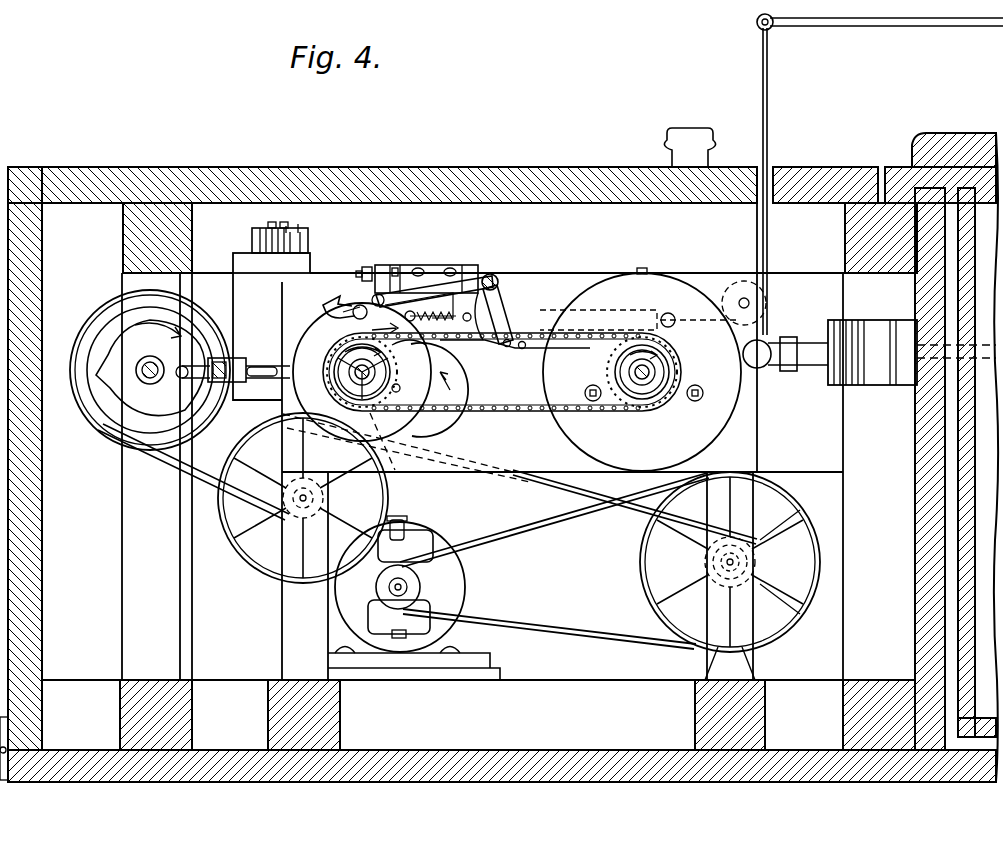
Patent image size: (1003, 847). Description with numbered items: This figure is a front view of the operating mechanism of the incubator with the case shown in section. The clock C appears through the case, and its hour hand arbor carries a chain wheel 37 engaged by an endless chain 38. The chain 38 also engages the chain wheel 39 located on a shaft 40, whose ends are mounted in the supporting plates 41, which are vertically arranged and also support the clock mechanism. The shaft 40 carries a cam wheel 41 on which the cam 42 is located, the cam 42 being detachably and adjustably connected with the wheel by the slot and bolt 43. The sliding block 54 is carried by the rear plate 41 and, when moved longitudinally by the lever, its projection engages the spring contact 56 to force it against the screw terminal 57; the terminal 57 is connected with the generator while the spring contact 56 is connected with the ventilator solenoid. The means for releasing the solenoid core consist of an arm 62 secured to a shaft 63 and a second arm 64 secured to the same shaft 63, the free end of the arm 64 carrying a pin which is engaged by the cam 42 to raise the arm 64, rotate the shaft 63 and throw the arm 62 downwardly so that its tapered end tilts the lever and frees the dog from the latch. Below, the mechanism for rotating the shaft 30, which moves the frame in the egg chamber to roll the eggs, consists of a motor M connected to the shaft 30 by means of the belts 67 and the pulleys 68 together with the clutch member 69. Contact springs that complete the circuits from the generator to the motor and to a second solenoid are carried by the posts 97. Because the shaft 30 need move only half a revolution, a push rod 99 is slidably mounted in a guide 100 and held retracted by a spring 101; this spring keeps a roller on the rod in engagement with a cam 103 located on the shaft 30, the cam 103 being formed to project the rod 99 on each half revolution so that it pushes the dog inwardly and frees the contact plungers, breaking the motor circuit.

The posts 97 is at (253, 237).
The clutch member 69 is at (100, 430).
The cam 103 is at (165, 380).
The shaft 30 is at (150, 364).
The push rod 99 is at (192, 353).
The spring 101 is at (236, 366).
The shaft 40 is at (344, 358).
The chain wheel 39 is at (432, 365).
The endless chain 38 is at (524, 406).
The clock C is at (678, 277).
The chain wheel 37 is at (614, 375).
The sliding block 54 is at (468, 265).
The screw terminal 57 is at (366, 266).
The spring contact 56 is at (396, 266).
The second arm 64 is at (428, 290).
The shaft 63 is at (496, 276).
The arm 62 is at (510, 305).
The cam 42 is at (336, 305).
The slot and bolt 43 is at (413, 326).
The supporting plates / cam wheel 41 is at (404, 380).
The guide 100 is at (250, 402).
The motor M is at (446, 542).
The belts 67 is at (574, 586).
The pulleys 68 is at (662, 592).